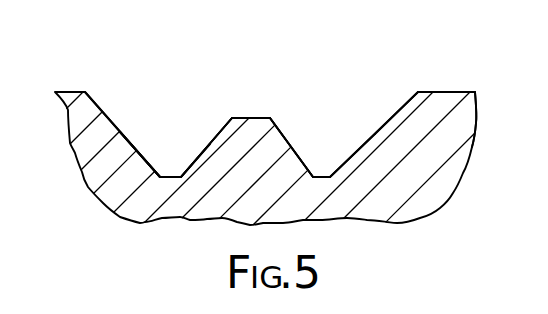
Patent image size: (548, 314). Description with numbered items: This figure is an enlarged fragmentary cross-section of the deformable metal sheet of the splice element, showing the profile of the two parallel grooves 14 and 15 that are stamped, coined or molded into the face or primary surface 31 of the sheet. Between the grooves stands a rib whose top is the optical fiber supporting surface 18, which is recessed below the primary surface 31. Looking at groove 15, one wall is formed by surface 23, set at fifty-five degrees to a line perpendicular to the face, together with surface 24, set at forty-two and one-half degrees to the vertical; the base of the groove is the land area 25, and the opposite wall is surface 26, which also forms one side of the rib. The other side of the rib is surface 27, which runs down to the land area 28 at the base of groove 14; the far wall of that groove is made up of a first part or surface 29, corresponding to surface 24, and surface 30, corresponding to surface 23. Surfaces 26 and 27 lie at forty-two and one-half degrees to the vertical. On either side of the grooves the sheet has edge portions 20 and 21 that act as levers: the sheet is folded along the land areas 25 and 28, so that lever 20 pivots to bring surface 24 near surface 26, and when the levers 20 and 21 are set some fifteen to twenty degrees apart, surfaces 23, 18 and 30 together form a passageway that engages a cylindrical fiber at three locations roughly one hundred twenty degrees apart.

The groove 14 is at (305, 135).
The groove 15 is at (185, 157).
The optical fiber supporting surface 18 is at (253, 117).
The edge portion 20 is at (80, 158).
The edge portion 21 is at (472, 122).
The surface 23 is at (96, 104).
The surface 24 is at (137, 130).
The land area 25 is at (172, 176).
The surface 26 is at (222, 130).
The surface 27 is at (283, 133).
The land area 28 is at (323, 176).
The surface 29 is at (363, 137).
The surface 30 is at (397, 111).
The primary surface 31 is at (452, 91).